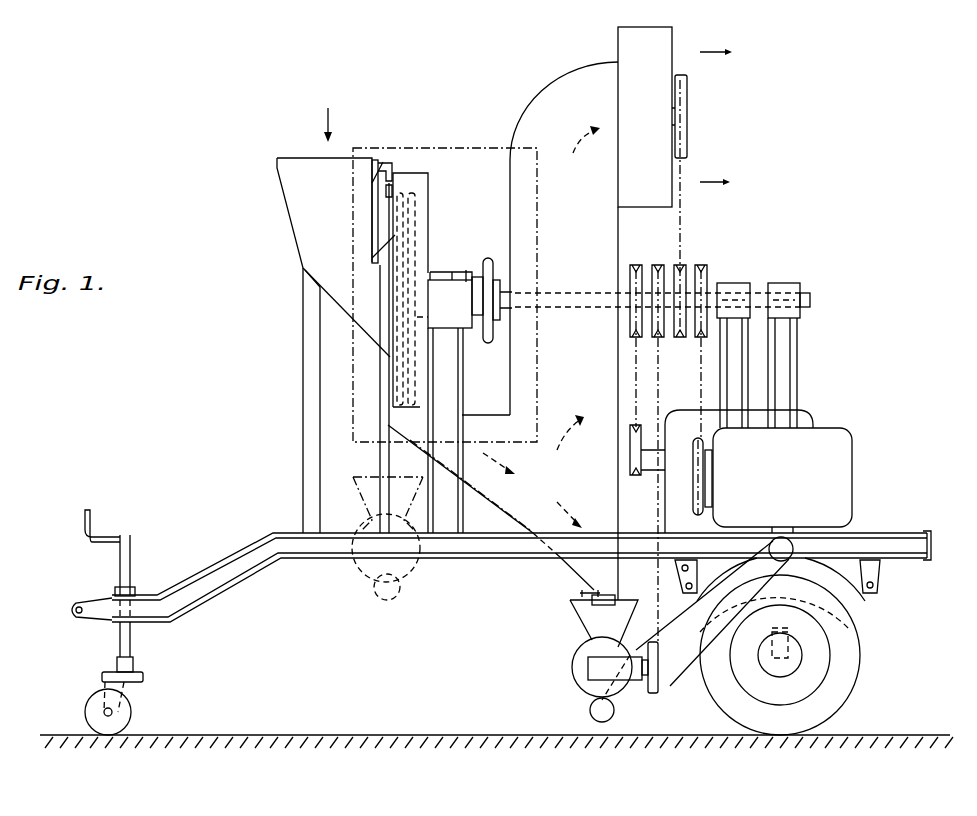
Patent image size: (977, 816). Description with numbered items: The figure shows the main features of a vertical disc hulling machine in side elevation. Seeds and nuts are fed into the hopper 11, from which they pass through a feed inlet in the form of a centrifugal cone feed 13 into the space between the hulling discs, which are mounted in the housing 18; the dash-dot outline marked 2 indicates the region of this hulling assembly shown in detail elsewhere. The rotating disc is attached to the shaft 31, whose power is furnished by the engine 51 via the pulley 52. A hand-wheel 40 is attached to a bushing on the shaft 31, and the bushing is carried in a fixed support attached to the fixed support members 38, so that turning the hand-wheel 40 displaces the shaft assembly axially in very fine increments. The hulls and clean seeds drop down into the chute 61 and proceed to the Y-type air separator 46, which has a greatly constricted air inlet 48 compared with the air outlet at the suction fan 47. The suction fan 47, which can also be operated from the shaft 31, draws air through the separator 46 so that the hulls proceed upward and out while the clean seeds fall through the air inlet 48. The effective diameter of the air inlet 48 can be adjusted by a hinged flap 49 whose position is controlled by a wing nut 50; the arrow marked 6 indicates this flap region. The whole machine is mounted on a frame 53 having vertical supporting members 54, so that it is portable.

The section view indicator FIG. 2 is at (445, 148).
The section view indicator FIG. 6 is at (572, 579).
The hopper 11 is at (290, 217).
The centrifugal cone feed 13 is at (383, 350).
The housing 18 is at (415, 172).
The shaft 31 is at (553, 292).
The fixed support members 38 is at (447, 330).
The hand-wheel 40 is at (488, 344).
The air separator 46 is at (513, 493).
The suction fan 47 is at (675, 62).
The air inlet 48 is at (612, 640).
The hinged flap 49 is at (605, 593).
The wing nut 50 is at (580, 595).
The engine 51 is at (852, 472).
The pulley 52 is at (700, 345).
The frame 53 is at (257, 570).
The vertical supporting members 54 is at (302, 408).
The chute 61 is at (417, 443).